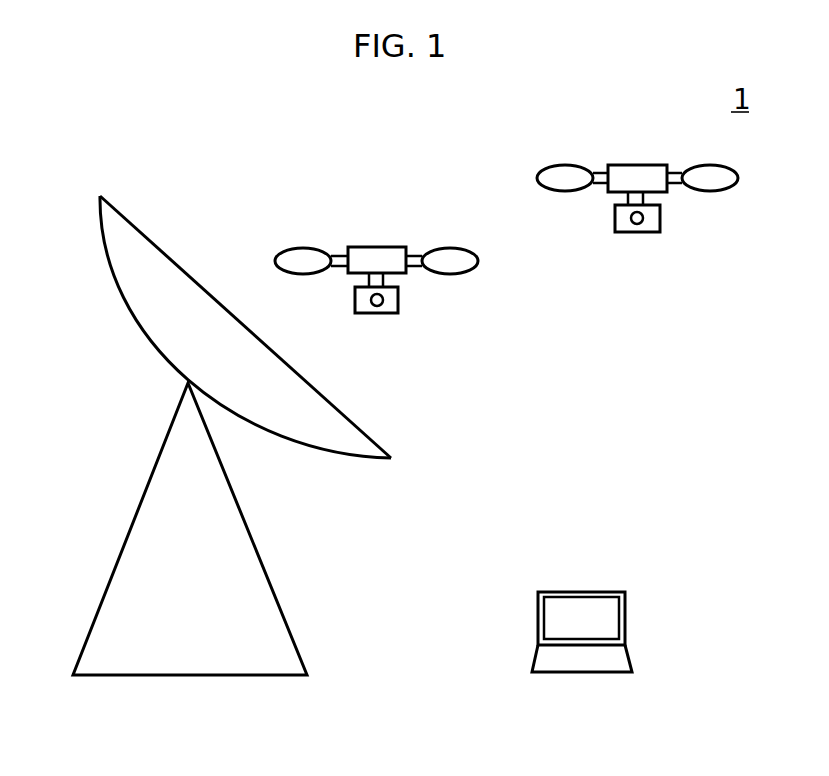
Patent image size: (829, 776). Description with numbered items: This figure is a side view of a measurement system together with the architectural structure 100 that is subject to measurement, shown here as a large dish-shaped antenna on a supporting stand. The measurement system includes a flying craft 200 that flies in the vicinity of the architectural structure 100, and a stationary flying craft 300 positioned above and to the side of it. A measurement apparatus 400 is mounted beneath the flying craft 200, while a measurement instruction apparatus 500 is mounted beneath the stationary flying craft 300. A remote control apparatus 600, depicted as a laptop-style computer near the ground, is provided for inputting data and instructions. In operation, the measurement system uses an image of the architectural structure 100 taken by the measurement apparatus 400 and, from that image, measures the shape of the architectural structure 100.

The architectural structure 100 is at (103, 193).
The flying craft 200 is at (398, 246).
The stationary flying craft 300 is at (657, 164).
The measurement apparatus 400 is at (388, 313).
The measurement instruction apparatus 500 is at (652, 232).
The remote control apparatus 600 is at (627, 592).